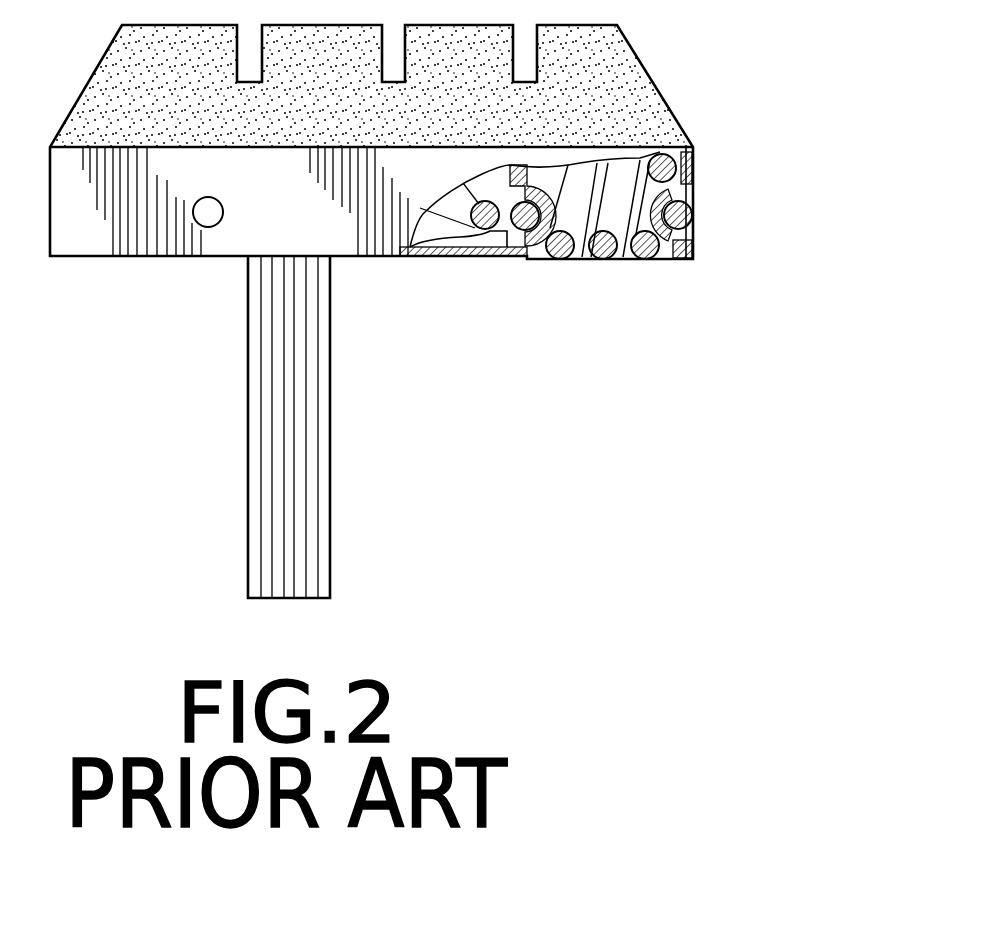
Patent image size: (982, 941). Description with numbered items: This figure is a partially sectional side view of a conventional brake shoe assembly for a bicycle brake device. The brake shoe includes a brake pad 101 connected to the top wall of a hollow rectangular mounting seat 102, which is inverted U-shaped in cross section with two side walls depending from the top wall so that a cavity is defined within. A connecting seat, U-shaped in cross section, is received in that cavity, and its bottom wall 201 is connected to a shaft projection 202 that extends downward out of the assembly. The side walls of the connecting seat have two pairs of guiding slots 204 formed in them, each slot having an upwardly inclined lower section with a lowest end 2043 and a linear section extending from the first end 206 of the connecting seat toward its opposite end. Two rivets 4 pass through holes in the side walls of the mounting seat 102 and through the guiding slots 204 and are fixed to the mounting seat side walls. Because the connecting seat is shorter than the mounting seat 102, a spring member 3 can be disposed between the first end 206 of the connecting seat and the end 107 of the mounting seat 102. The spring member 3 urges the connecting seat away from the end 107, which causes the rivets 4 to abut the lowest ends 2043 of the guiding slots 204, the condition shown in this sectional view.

The brake pad 101 is at (652, 80).
The mounting seat 102 is at (695, 168).
The shaft projection 202 is at (330, 508).
The guiding slots 204 is at (392, 253).
The lowest end 2043 is at (437, 255).
The rivets 4 is at (212, 227).
The bottom wall 201 is at (460, 258).
The first end 206 is at (542, 257).
The spring member 3 is at (607, 257).
The end 107 is at (680, 257).